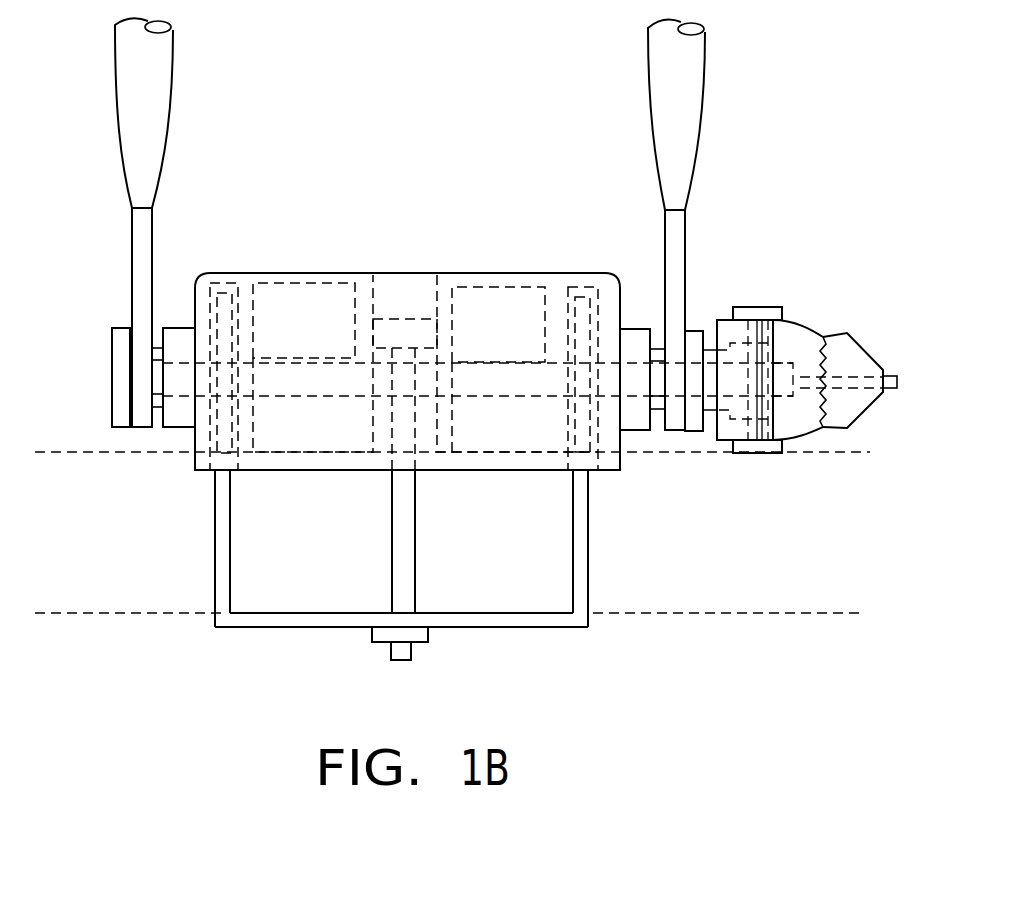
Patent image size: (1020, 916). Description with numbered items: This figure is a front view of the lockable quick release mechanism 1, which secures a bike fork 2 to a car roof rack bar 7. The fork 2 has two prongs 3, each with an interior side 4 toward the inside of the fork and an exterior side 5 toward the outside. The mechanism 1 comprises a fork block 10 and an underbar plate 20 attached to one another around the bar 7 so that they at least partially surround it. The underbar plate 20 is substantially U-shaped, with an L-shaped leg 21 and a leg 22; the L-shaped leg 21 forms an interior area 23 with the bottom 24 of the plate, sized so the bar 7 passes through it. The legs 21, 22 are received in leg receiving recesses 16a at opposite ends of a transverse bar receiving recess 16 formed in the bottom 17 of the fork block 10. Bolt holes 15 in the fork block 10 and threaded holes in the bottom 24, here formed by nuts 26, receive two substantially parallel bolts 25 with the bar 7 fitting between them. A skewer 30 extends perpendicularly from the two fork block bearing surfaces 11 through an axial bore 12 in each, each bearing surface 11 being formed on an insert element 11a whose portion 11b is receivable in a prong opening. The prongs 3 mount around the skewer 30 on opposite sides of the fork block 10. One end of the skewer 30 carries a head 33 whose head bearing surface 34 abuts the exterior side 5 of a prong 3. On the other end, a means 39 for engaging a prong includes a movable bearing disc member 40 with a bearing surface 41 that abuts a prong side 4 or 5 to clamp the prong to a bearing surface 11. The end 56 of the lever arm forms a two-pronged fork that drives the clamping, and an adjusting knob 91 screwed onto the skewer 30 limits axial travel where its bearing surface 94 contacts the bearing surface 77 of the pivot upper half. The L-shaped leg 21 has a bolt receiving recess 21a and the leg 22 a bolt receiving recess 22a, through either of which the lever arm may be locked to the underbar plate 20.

The lockable quick release mechanism 1 is at (240, 646).
The bike fork 2 is at (268, 110).
The prong 3 is at (174, 101).
The interior side 4 is at (153, 253).
The exterior side 5 is at (132, 252).
The car roof rack bar 7 is at (732, 594).
The fork block 10 is at (306, 272).
The fork block bearing surface 11 is at (156, 436).
The insert element 11a is at (180, 440).
The portion of the insert element 11b is at (166, 330).
The axial bore 12 is at (225, 330).
The bolt holes 15 is at (441, 300).
The transverse bar receiving recess 16 is at (307, 472).
The leg receiving recesses 16a is at (238, 410).
The bottom of the fork block 17 is at (350, 472).
The underbar plate 20 is at (590, 613).
The L-shaped leg 21 is at (582, 578).
The bolt receiving recess 21a is at (262, 347).
The leg 22 is at (226, 551).
The bolt receiving recess 22a is at (562, 350).
The interior area 23 is at (223, 503).
The bottom of the underbar plate 24 is at (532, 613).
The bolts 25 is at (418, 548).
The nuts 26 is at (430, 640).
The skewer 30 is at (336, 387).
The head 33 is at (112, 360).
The head bearing surface 34 is at (133, 424).
The means for engaging a prong 39 is at (705, 215).
The movable bearing disc member 40 is at (700, 331).
The bearing surface 41 is at (690, 434).
The end of the lever arm 56 is at (765, 307).
The bearing surface of the pivot upper half 77 is at (824, 352).
The adjusting knob 91 is at (876, 364).
The bearing surface of the knob 94 is at (840, 358).